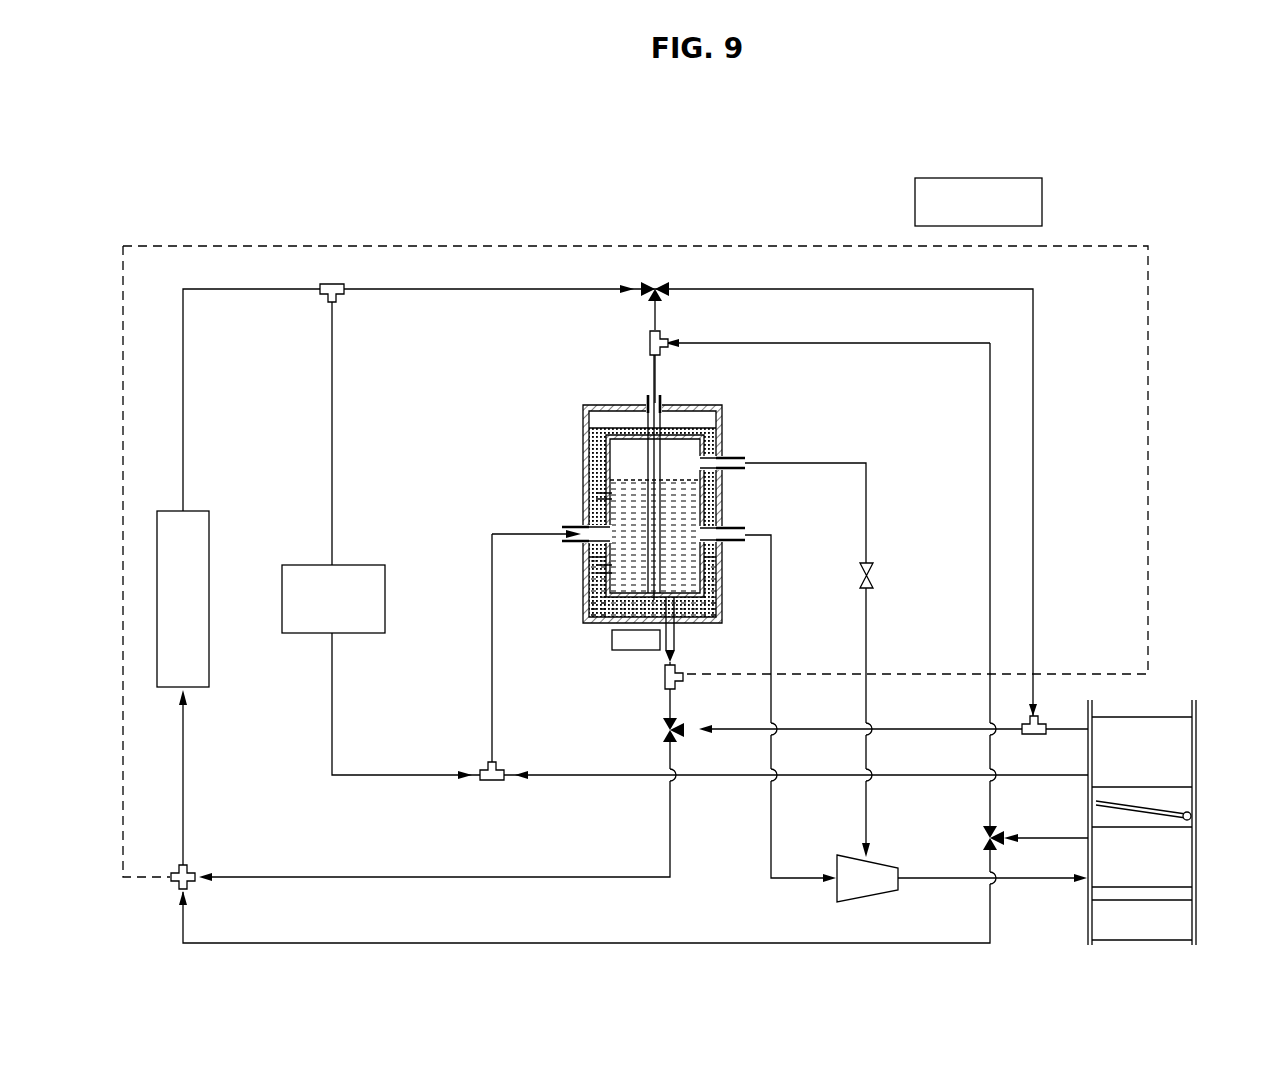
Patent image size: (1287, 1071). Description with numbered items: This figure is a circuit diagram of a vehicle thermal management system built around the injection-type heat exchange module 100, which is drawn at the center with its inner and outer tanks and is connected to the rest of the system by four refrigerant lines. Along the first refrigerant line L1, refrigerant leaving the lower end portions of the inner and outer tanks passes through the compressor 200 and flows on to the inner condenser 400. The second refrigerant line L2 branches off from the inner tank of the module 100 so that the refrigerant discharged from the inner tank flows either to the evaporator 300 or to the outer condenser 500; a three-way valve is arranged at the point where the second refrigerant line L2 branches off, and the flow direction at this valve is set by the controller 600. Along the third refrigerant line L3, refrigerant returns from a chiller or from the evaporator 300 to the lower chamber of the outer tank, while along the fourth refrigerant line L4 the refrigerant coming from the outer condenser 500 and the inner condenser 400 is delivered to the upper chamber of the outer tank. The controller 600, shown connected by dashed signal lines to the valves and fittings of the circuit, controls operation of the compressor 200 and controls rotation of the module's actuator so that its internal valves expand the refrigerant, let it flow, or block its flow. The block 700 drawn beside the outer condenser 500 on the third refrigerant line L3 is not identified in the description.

The injection-type heat exchange module 100 is at (607, 405).
The compressor 200 is at (835, 892).
The evaporator 300 is at (1174, 717).
The inner condenser 400 is at (1185, 855).
The outer condenser 500 is at (200, 511).
The controller 600 is at (1042, 202).
The battery / electric component 700 is at (305, 565).
The first refrigerant line L1 is at (773, 628).
The second refrigerant line L2 is at (672, 708).
The third refrigerant line L3 is at (493, 693).
The fourth refrigerant line L4 is at (540, 291).